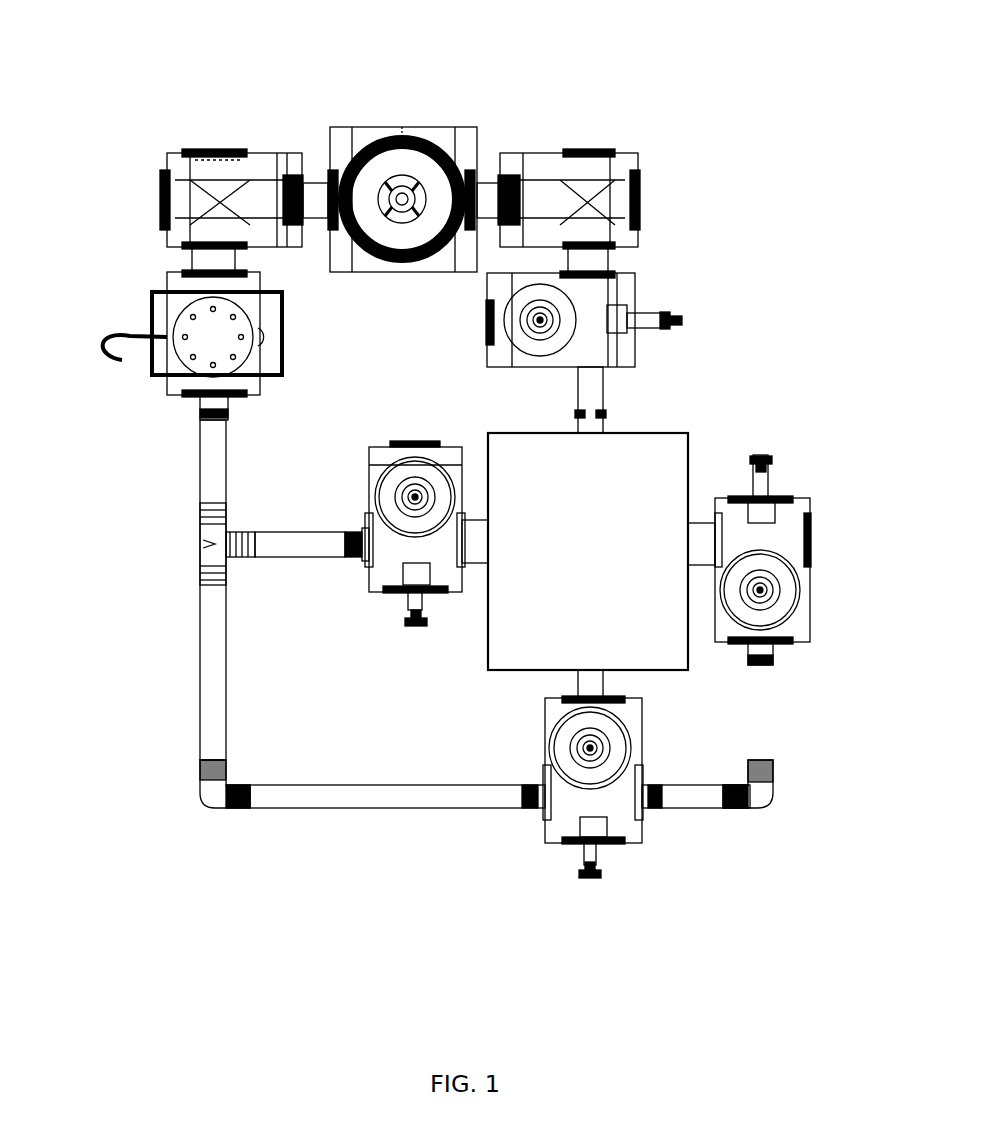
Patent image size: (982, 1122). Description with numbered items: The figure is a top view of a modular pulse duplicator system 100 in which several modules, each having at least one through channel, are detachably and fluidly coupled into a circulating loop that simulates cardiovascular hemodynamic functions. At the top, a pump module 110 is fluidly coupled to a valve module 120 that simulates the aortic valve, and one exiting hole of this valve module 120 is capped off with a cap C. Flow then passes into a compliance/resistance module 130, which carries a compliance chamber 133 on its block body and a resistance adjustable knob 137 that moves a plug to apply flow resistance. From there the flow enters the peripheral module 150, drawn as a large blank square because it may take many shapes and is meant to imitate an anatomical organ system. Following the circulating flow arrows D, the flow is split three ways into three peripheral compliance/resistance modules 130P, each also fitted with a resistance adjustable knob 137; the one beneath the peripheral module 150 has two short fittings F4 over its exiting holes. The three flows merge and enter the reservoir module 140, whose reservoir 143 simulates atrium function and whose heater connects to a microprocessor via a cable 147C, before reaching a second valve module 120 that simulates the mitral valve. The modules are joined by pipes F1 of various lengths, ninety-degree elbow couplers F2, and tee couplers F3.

The modular pulse duplicator system 100 is at (802, 96).
The pump module 110 is at (342, 128).
The valve module 120 is at (258, 155).
The compliance/resistance module 130 is at (628, 282).
The peripheral compliance/resistance module 130P is at (790, 503).
The compliance chamber 133 is at (548, 343).
The resistance adjustable knob 137 is at (678, 322).
The reservoir module 140 is at (143, 333).
The reservoir 143 is at (200, 346).
The cable 147C is at (141, 332).
The peripheral module 150 is at (588, 551).
The cap C is at (220, 150).
The circulating flow arrow D is at (437, 112).
The pipe F1 is at (210, 630).
The elbow coupler F2 is at (200, 793).
The tee coupler F3 is at (200, 520).
The short fitting F4 is at (775, 652).